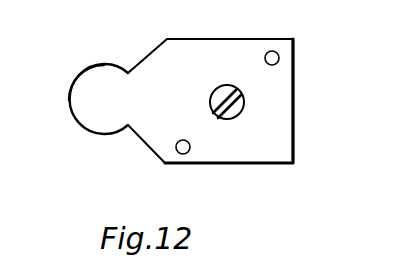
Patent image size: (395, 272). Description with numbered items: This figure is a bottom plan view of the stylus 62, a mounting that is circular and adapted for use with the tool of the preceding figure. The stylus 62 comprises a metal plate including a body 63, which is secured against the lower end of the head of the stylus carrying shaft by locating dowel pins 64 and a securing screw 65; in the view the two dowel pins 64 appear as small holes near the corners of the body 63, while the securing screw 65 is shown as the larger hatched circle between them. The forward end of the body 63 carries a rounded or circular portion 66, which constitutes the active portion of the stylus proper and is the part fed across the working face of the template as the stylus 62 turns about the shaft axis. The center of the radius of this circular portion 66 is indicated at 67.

The stylus 62 is at (297, 141).
The body 63 is at (192, 45).
The locating dowel pins 64 is at (279, 58).
The securing screw 65 is at (209, 97).
The circular portion 66 is at (73, 117).
The center of the radius of the circular portion 67 is at (103, 99).